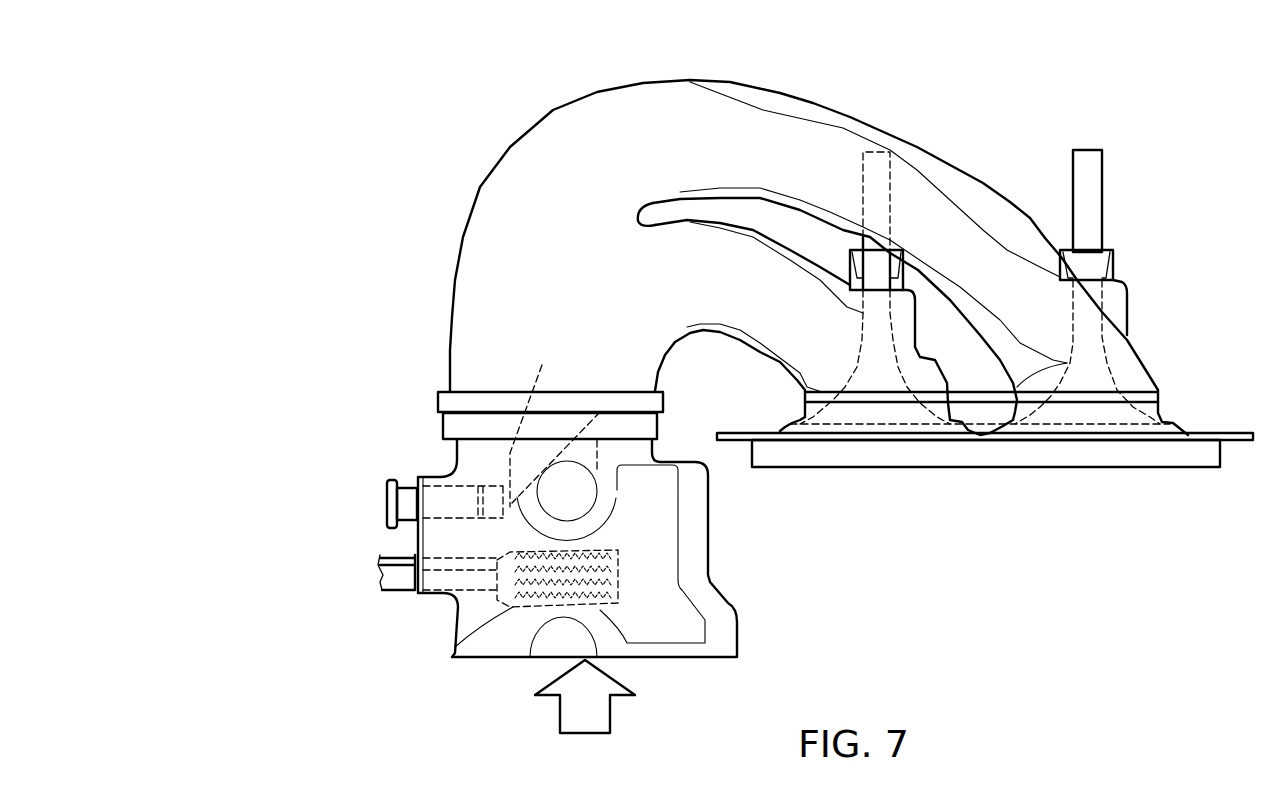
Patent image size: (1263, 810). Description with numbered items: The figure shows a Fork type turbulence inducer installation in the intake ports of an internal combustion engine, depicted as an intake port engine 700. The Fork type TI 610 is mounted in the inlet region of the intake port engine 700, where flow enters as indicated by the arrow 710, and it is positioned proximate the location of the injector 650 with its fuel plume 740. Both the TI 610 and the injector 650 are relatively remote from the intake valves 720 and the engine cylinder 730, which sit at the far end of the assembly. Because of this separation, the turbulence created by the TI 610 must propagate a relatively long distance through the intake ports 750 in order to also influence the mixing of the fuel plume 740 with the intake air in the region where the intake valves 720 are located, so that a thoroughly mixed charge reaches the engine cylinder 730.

The intake port engine 700 is at (418, 96).
The inlet flow direction arrow 710 is at (557, 716).
The intake valves 720 is at (1080, 233).
The engine cylinder 730 is at (973, 534).
The fuel plume 740 is at (543, 428).
The intake ports 750 is at (670, 147).
The injector 650 is at (362, 504).
The Fork type turbulence inducer 610 is at (362, 571).